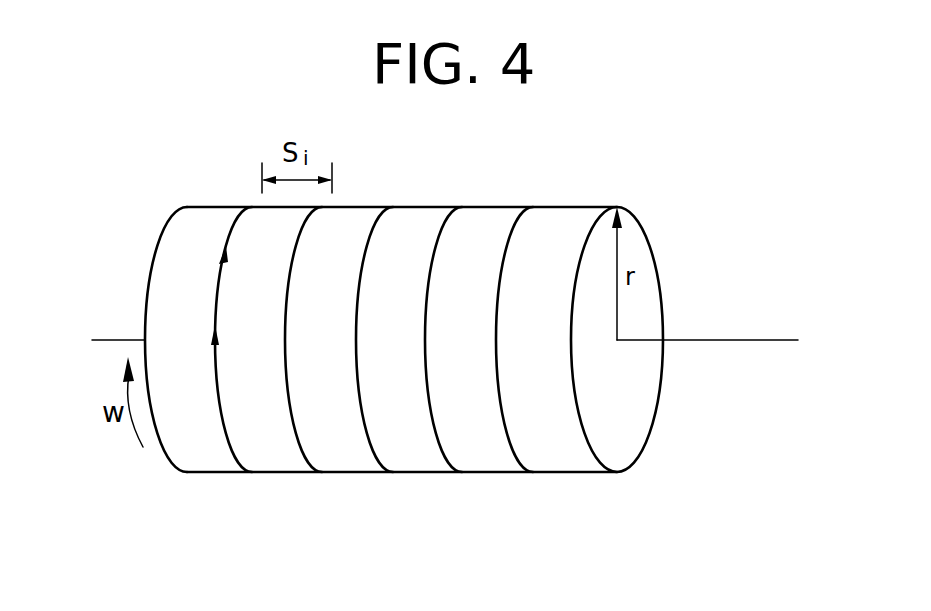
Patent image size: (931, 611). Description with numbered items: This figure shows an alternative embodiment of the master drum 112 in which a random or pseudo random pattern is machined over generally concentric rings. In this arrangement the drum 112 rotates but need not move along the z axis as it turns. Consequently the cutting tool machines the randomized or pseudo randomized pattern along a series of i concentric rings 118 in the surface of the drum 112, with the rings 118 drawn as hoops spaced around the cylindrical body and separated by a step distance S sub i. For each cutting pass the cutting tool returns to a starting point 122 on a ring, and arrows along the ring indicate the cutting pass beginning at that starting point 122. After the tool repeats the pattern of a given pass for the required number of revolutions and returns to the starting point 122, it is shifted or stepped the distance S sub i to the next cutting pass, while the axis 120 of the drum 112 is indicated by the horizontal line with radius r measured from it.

The drum 112 is at (275, 472).
The concentric rings 118 is at (235, 232).
The longitudinal axis of roller 120 is at (728, 342).
The starting point 122 is at (218, 283).